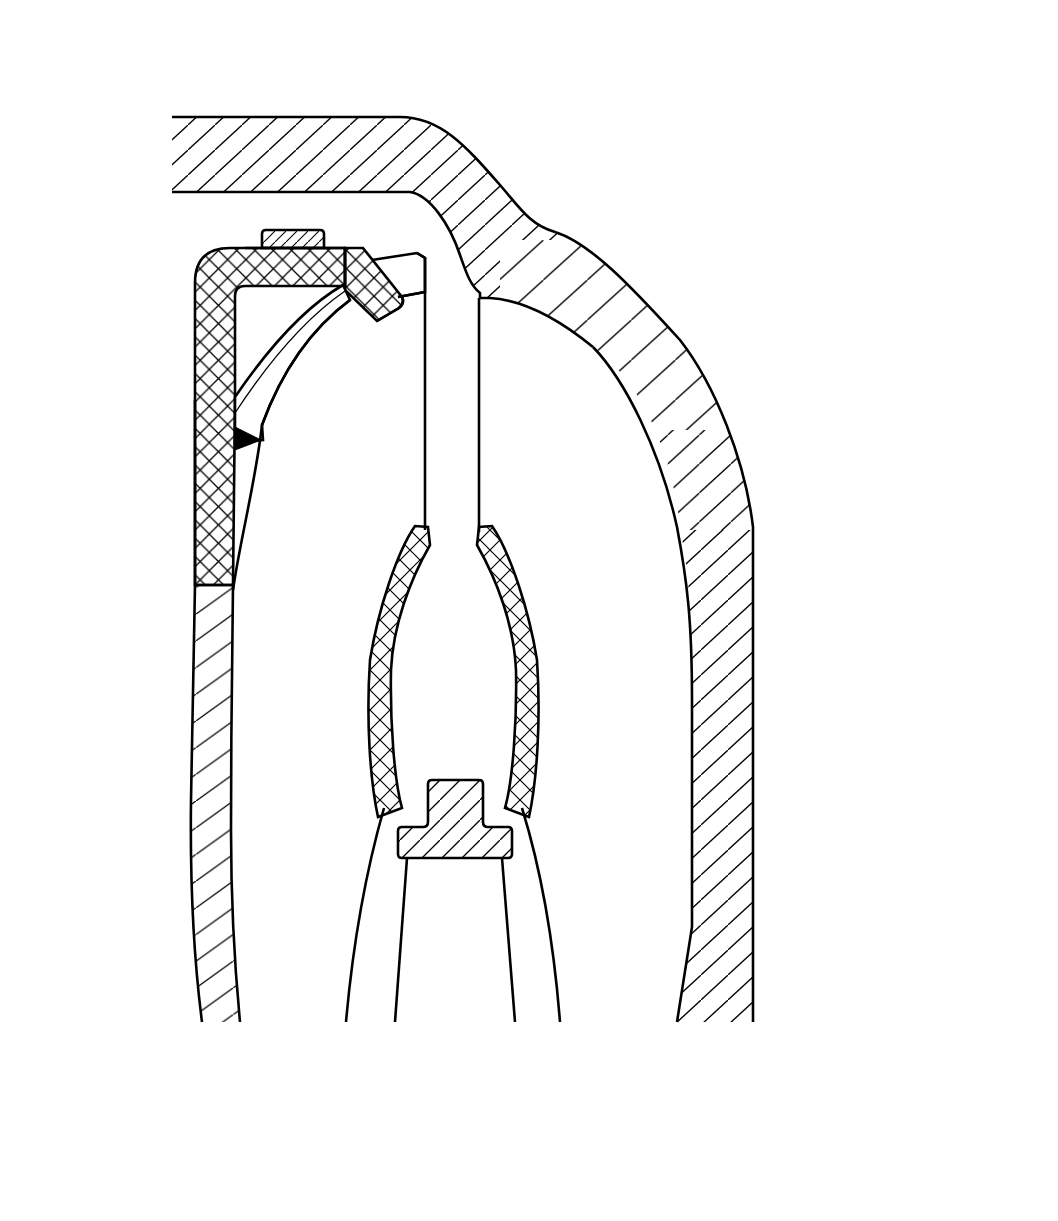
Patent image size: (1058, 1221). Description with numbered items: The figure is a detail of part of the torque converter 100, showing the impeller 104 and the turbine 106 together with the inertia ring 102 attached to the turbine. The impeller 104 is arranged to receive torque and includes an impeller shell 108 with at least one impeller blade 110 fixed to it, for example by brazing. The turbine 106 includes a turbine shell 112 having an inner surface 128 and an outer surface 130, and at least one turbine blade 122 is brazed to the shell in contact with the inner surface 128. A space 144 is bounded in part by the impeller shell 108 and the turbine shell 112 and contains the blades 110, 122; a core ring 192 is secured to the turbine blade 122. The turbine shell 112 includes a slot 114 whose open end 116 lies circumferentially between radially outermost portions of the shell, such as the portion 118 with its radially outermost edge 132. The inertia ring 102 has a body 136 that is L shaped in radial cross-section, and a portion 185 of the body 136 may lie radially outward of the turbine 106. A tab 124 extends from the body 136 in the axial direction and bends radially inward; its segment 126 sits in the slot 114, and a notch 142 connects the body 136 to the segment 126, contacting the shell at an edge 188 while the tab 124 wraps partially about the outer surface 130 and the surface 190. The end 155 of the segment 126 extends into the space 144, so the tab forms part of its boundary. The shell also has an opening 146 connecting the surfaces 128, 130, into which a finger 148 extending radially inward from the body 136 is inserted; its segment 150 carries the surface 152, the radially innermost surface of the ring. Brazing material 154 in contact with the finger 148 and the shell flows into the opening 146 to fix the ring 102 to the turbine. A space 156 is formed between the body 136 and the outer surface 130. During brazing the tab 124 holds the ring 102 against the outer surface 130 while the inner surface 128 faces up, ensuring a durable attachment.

The torque converter 100 is at (735, 88).
The inertia ring 102 is at (185, 252).
The impeller 104 is at (702, 262).
The turbine 106 is at (172, 617).
The impeller shell 108 is at (687, 350).
The impeller blade 110 is at (580, 439).
The turbine shell 112 is at (183, 686).
The slot 114 is at (398, 250).
The open end 116 is at (430, 261).
The radially outermost portion 118 is at (343, 277).
The turbine blade 122 is at (268, 849).
The tab 124 is at (392, 327).
The segment 126 is at (358, 322).
The inner surface 128 is at (233, 647).
The outer surface 130 is at (190, 768).
The radially outermost edge 132 is at (487, 163).
The body 136 is at (217, 293).
The notch 142 is at (303, 228).
The space 144 is at (458, 497).
The opening 146 is at (244, 481).
The finger 148 is at (185, 453).
The segment 150 is at (215, 527).
The surface 152 is at (234, 557).
The brazing material 154 is at (248, 448).
The end 155 is at (400, 297).
The space 156 is at (270, 310).
The portion 185 is at (307, 263).
The edge 188 is at (338, 318).
The surface 190 is at (356, 276).
The core ring 192 is at (383, 670).